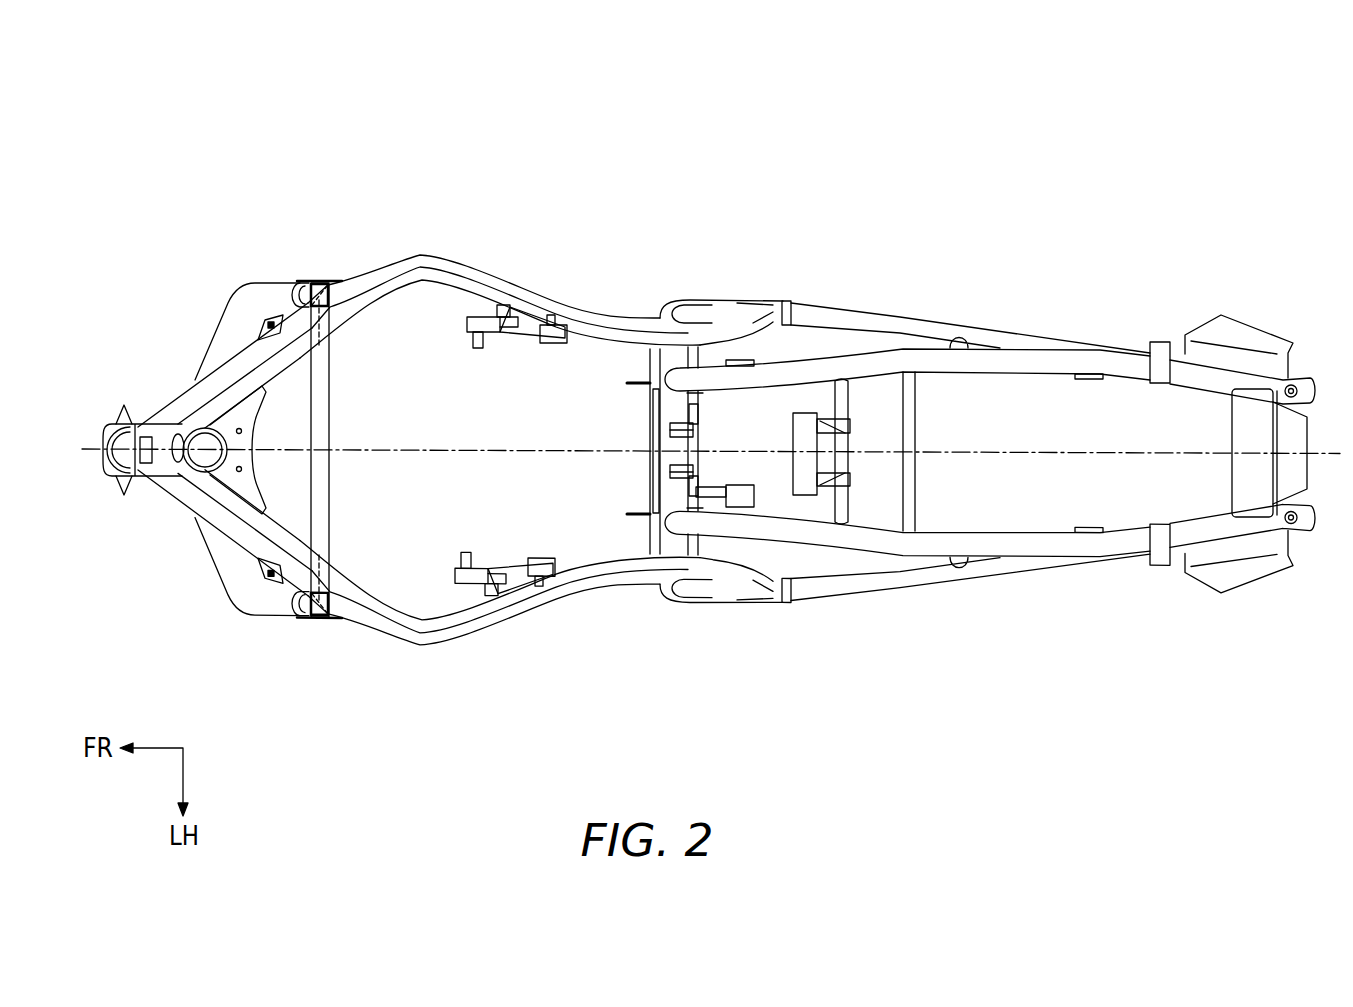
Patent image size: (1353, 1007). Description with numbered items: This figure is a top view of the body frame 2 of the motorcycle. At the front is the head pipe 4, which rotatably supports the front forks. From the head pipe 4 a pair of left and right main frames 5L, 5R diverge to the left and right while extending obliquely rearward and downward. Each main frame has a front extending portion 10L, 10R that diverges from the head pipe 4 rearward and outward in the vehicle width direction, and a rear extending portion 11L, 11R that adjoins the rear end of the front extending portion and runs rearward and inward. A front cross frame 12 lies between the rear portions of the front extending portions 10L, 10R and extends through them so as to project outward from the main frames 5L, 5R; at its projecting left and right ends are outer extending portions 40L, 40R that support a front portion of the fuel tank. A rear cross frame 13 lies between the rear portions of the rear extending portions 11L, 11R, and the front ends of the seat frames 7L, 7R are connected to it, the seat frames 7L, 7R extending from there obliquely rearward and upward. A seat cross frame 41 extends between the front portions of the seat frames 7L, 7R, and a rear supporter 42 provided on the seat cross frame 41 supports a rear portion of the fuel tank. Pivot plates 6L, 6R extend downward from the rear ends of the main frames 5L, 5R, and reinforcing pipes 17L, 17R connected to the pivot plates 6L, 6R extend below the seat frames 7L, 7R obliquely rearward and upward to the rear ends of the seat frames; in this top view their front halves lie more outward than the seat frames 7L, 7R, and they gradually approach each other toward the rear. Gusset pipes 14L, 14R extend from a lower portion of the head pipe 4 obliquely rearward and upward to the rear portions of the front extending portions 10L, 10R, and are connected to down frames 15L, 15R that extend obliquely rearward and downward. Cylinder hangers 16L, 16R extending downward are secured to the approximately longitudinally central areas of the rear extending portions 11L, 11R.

The body frame 2 is at (1092, 137).
The head pipe 4 is at (176, 426).
The right main frame 5R is at (465, 250).
The left main frame 5L is at (440, 657).
The right pivot plate 6R is at (730, 311).
The left pivot plate 6L is at (722, 592).
The right seat frame 7R is at (875, 363).
The left seat frame 7L is at (886, 540).
The right front extending portion 10R is at (288, 312).
The left front extending portion 10L is at (289, 600).
The right rear extending portion 11R is at (573, 306).
The left rear extending portion 11L is at (542, 606).
The front cross frame 12 is at (332, 396).
The rear cross frame 13 is at (650, 408).
The right gusset pipe 14R is at (194, 395).
The left gusset pipe 14L is at (181, 507).
The right down frame 15R is at (258, 290).
The left down frame 15L is at (247, 594).
The right cylinder hanger 16R is at (524, 340).
The left cylinder hanger 16L is at (523, 568).
The right reinforcing pipe 17R is at (830, 317).
The left reinforcing pipe 17L is at (834, 593).
The right outer extending portion 40R is at (318, 282).
The left outer extending portion 40L is at (316, 618).
The seat cross frame 41 is at (851, 407).
The rear supporter 42 is at (783, 496).